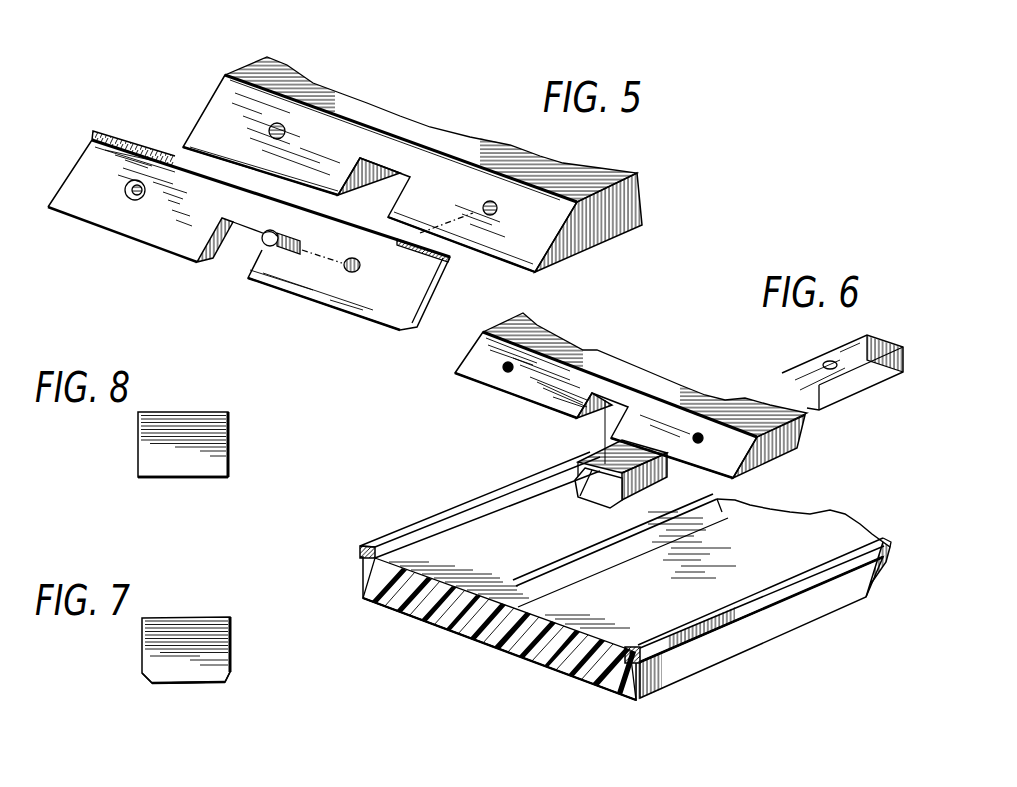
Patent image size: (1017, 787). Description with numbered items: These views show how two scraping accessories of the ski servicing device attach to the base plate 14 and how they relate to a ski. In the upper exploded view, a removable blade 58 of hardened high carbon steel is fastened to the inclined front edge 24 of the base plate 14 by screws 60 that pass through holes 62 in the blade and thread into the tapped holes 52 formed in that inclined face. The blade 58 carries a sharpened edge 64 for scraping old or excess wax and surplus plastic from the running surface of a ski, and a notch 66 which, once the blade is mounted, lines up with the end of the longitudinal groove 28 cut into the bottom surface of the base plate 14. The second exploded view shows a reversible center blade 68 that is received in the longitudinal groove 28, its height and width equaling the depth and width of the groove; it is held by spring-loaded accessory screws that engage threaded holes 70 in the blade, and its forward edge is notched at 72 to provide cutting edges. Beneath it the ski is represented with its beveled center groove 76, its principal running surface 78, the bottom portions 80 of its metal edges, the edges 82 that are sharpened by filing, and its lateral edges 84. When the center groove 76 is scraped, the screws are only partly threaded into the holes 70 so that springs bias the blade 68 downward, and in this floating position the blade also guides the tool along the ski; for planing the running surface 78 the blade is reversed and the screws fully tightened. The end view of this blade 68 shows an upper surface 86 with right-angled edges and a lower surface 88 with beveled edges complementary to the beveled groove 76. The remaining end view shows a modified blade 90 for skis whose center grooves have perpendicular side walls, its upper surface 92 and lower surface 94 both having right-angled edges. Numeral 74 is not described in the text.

In FIG. 5, the base plate 14 is at (590, 190).
In FIG. 5, the inclined front edge 24 is at (453, 167).
In FIG. 6, the inclined front edge 24 is at (475, 370).
In FIG. 5, the longitudinal groove 28 is at (378, 160).
In FIG. 6, the longitudinal groove 28 is at (593, 420).
In FIG. 5, the threaded holes 52 is at (285, 133).
In FIG. 5, the removable blade 58 is at (153, 232).
In FIG. 5, the screws 60 is at (318, 240).
In FIG. 5, the holes 62 is at (360, 266).
In FIG. 5, the sharpened edge 64 is at (337, 305).
In FIG. 5, the notch 66 is at (225, 255).
In FIG. 6, the reversible center blade 68 is at (645, 490).
In FIG. 7, the reversible center blade 68 is at (217, 642).
In FIG. 6, the threaded holes 70 is at (832, 362).
In FIG. 6, the notch 72 is at (582, 493).
In FIG. 6, the base 74 is at (433, 503).
In FIG. 6, the center groove 76 is at (516, 600).
In FIG. 6, the principal running surface 78 is at (482, 527).
In FIG. 6, the bottom portions of the metal edges 80 is at (372, 545).
In FIG. 6, the edges 82 is at (887, 537).
In FIG. 6, the lateral edge 84 is at (805, 608).
In FIG. 7, the upper surface 86 is at (193, 617).
In FIG. 7, the lower surface 88 is at (207, 683).
In FIG. 8, the blade 90 is at (216, 443).
In FIG. 8, the upper surface 92 is at (202, 410).
In FIG. 8, the lower surface 94 is at (202, 477).